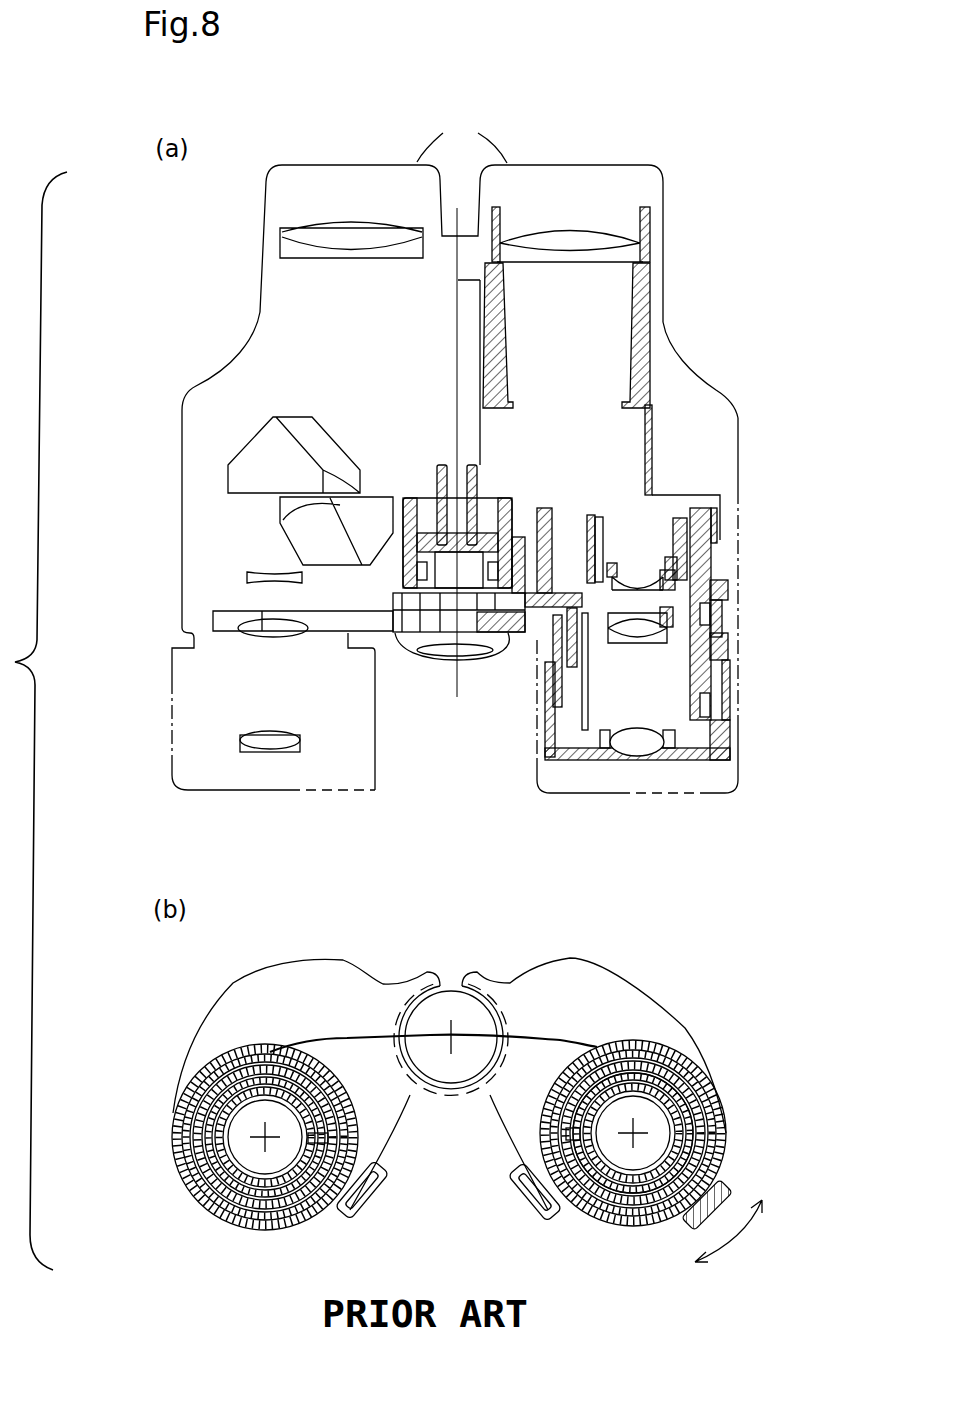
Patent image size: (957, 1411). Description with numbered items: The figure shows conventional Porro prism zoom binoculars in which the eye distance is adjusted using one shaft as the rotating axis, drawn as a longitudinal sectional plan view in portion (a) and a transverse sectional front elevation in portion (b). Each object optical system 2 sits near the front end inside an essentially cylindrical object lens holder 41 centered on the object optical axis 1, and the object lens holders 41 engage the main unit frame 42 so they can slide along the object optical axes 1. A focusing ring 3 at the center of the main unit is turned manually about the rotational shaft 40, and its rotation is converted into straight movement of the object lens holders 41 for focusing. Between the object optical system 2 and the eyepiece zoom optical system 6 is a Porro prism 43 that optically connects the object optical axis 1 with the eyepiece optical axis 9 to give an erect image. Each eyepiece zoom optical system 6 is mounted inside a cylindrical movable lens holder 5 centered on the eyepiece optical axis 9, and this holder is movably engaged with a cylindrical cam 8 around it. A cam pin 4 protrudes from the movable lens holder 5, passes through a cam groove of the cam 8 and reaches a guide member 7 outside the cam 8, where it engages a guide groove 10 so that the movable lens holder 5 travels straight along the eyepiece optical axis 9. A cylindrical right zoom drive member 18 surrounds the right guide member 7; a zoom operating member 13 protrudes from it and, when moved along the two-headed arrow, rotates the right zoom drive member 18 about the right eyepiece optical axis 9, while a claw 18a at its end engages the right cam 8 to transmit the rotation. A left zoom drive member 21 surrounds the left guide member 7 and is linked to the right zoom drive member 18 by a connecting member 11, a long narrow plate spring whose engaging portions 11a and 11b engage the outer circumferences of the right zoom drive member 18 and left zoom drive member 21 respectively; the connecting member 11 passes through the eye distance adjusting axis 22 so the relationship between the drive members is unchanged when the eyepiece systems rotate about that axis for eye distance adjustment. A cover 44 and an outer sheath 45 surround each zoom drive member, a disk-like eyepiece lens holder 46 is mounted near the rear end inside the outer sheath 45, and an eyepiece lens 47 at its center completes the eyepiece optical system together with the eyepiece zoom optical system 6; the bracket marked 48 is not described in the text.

The object optical axis 1 is at (348, 440).
The object optical system 2 is at (308, 230).
The focusing ring 3 is at (513, 502).
The cam pin 4 is at (640, 580).
The movable lens holder 5 is at (722, 587).
The eyepiece zoom optical system 6 is at (217, 612).
The guide member 7 is at (553, 648).
The cam 8 is at (540, 712).
The eyepiece optical axis 9 is at (270, 497).
The guide groove 10 is at (573, 1137).
The connecting member 11 is at (340, 620).
The engaging portion 11a is at (690, 1108).
The engaging portion 11b is at (207, 1206).
The zoom operating member 13 is at (725, 1210).
The right zoom drive member 18 is at (727, 667).
The claw 18a is at (573, 750).
The left zoom drive member 21 is at (182, 1143).
The eye distance adjusting axis 22 is at (458, 357).
The rotational shaft 40 is at (450, 523).
The object lens holder 41 is at (652, 222).
The main unit frame 42 is at (658, 320).
The Porro prism 43 is at (258, 457).
The cover 44 is at (737, 630).
The outer sheath 45 is at (723, 675).
The eyepiece lens holder 46 is at (690, 760).
The eyepiece lens 47 is at (265, 752).
The hinge clip 48 is at (452, 1140).